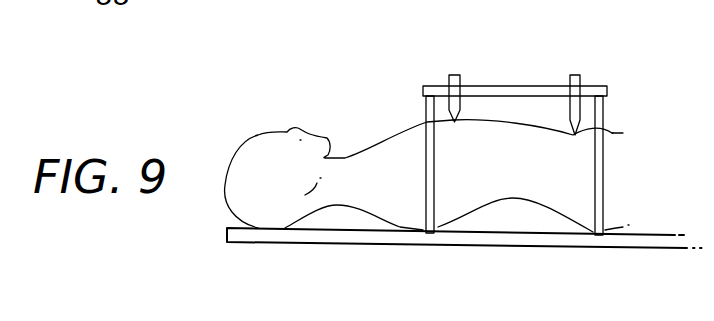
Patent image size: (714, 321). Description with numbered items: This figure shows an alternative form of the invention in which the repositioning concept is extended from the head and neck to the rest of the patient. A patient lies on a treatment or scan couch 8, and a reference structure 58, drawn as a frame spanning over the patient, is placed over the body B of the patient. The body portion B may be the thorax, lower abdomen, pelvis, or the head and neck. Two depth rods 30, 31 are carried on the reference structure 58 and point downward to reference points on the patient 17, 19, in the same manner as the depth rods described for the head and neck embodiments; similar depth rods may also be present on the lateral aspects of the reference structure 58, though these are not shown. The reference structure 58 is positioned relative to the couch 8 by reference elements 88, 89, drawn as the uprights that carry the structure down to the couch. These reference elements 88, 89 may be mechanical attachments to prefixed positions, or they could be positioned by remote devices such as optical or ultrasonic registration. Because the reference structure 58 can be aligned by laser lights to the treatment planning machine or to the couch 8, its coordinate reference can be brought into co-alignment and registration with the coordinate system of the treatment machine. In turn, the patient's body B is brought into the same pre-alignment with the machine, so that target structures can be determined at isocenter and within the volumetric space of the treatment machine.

The treatment or scan couch 8 is at (338, 244).
The body of the patient B is at (507, 200).
The reference structure 58 is at (522, 85).
The reference element 89 is at (426, 148).
The reference element 88 is at (605, 108).
The depth rod 30 is at (454, 73).
The depth rod 31 is at (575, 75).
The reference point on the patient 17 is at (453, 120).
The reference point on the patient 19 is at (612, 133).